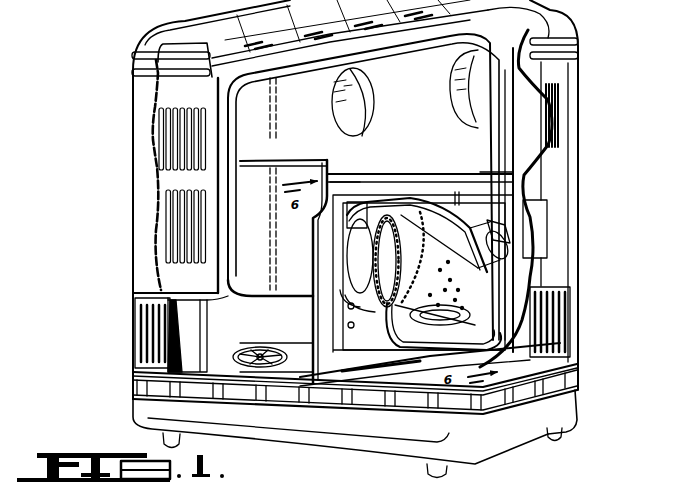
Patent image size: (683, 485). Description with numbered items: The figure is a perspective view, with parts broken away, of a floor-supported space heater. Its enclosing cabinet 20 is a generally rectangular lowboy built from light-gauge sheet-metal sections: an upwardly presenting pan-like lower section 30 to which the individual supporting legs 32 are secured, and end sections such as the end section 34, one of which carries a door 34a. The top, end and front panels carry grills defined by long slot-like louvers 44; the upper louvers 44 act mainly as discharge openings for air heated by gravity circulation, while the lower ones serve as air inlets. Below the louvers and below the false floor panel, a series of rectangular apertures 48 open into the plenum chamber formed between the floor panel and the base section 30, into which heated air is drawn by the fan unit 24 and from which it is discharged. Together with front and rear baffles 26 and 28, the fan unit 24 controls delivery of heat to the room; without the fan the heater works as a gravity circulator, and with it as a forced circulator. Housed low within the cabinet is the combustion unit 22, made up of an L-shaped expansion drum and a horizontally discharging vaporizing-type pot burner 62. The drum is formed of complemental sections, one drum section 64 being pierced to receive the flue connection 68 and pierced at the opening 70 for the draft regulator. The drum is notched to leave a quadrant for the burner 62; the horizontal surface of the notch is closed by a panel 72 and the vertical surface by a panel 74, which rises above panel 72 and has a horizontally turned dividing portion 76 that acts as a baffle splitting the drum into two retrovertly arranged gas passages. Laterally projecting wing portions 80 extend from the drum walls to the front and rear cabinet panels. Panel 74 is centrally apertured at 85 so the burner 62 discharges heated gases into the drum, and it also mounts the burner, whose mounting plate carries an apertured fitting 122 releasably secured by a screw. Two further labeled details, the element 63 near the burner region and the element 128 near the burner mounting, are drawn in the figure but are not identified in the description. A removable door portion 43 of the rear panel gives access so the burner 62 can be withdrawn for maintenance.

The enclosing cabinet 20 is at (576, 20).
The combustion unit 22 is at (213, 92).
The fan unit 24 is at (250, 344).
The front baffle 26 is at (200, 303).
The rear baffle 28 is at (268, 346).
The lower section 30 is at (485, 450).
The supporting legs 32 is at (163, 438).
The end section 34 is at (571, 182).
The door 34a is at (540, 225).
The door portion 43 is at (522, 263).
The slot-like louvers 44 is at (140, 333).
The rectangular apertures 48 is at (340, 404).
The pot burner 62 is at (362, 348).
The floor plate edge 63 is at (405, 352).
The drum section 64 is at (415, 372).
The flue connection 68 is at (340, 92).
The pierced opening 70 is at (457, 68).
The panel 72 is at (433, 162).
The panel 74 is at (353, 160).
The dividing portion 76 is at (272, 160).
The wing portions 80 is at (323, 251).
The central aperture 85 is at (424, 281).
The apertured fitting 122 is at (346, 243).
The lower bracket 128 is at (350, 247).